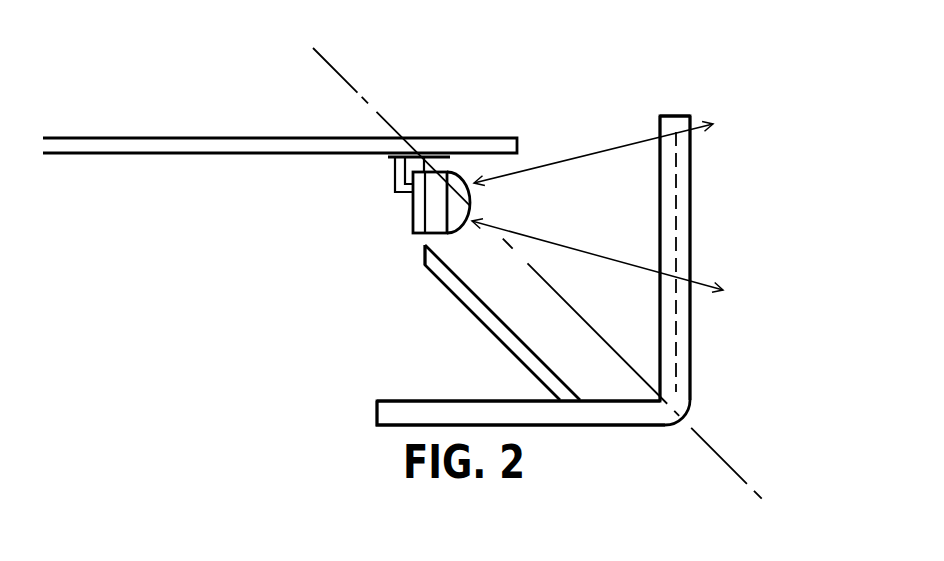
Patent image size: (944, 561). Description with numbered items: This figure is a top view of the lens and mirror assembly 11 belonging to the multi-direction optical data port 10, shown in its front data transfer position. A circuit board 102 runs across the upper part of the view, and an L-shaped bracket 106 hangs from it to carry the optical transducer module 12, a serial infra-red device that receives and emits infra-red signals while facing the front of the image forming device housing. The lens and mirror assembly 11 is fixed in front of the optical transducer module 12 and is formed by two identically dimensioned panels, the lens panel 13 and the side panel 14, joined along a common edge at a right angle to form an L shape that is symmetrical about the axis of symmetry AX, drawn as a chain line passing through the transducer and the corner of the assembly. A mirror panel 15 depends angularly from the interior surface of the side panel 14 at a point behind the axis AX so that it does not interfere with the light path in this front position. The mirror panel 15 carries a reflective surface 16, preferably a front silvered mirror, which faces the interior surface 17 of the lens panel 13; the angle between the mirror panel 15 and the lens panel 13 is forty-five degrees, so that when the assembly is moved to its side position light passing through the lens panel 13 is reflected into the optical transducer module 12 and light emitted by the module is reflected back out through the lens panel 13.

The multi-direction optical data port 10 is at (292, 283).
The lens and mirror assembly 11 is at (447, 382).
The optical transducer module 12 is at (457, 230).
The lens panel 13 is at (681, 320).
The side panel 14 is at (620, 424).
The mirror panel 15 is at (427, 266).
The reflective surface 16 is at (522, 342).
The interior surface of lens panel 17 is at (630, 204).
The circuit board 102 is at (200, 138).
The L-shaped bracket 106 is at (395, 185).
The axis of symmetry AX is at (553, 264).